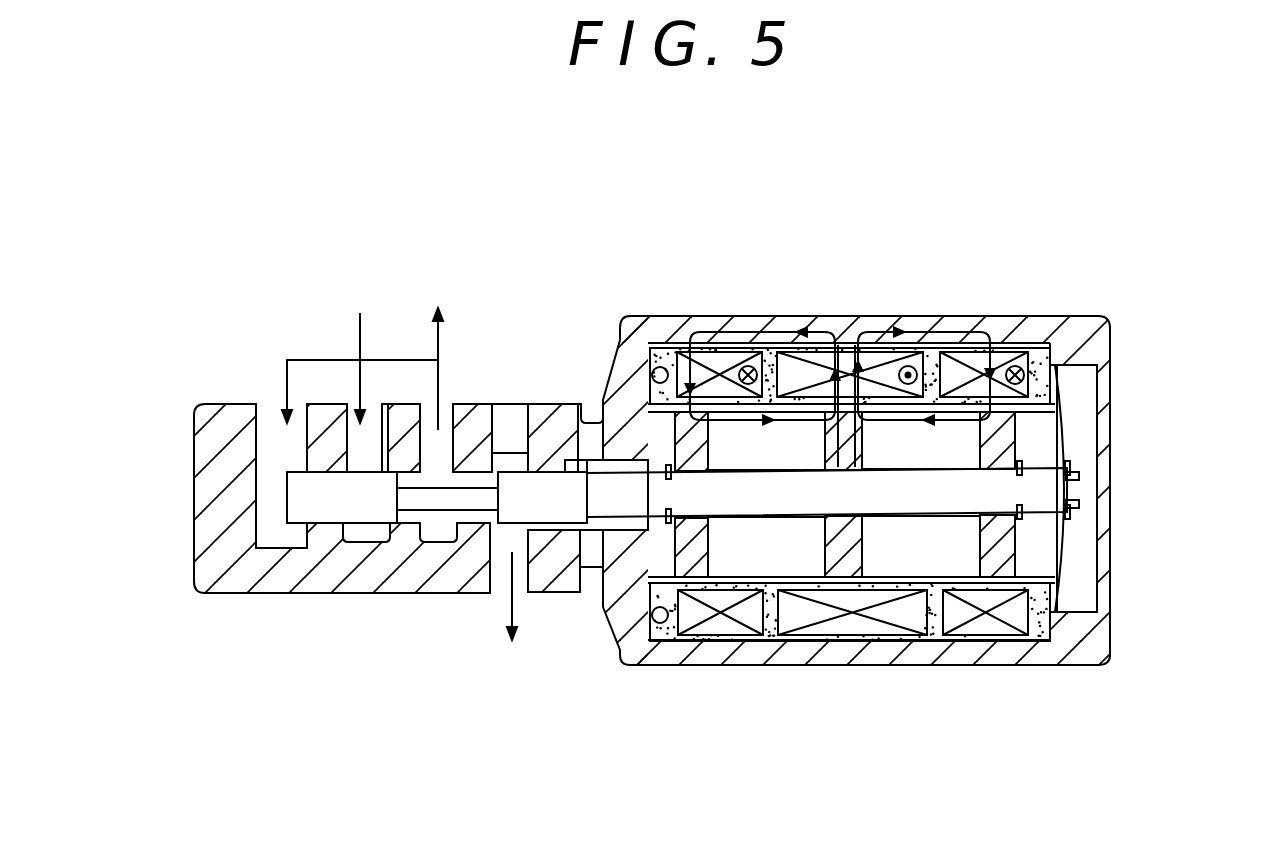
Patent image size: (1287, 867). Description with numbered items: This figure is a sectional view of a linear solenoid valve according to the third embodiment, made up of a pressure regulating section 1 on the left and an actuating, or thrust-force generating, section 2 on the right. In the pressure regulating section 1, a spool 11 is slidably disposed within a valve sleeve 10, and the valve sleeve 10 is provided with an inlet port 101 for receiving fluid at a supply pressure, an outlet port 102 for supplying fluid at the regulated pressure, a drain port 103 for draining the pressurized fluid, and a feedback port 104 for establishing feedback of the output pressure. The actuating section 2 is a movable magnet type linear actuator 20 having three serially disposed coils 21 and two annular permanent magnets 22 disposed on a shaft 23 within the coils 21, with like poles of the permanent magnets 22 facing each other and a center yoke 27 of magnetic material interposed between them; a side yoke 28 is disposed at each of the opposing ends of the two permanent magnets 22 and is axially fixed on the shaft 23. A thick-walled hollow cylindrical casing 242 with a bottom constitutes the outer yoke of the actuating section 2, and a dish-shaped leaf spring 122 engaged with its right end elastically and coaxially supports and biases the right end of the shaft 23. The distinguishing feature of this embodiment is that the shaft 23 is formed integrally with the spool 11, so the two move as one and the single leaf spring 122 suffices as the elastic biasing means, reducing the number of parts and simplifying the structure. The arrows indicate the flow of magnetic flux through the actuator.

The pressure regulating section 1 is at (402, 262).
The valve sleeve 10 is at (372, 568).
The inlet port 101 is at (358, 425).
The outlet port 102 is at (438, 435).
The drain port 103 is at (502, 563).
The feedback port 104 is at (275, 435).
The spool 11 is at (552, 490).
The actuating section 2 is at (995, 300).
The movable magnet type linear actuator 20 is at (760, 708).
The coils 21 is at (973, 360).
The permanent magnets 22 is at (902, 543).
The shaft 23 is at (917, 492).
The center yoke 27 is at (840, 450).
The side yoke 28 is at (1000, 547).
The leaf spring 122 is at (1065, 565).
The hollow cylindrical casing 242 is at (1066, 335).